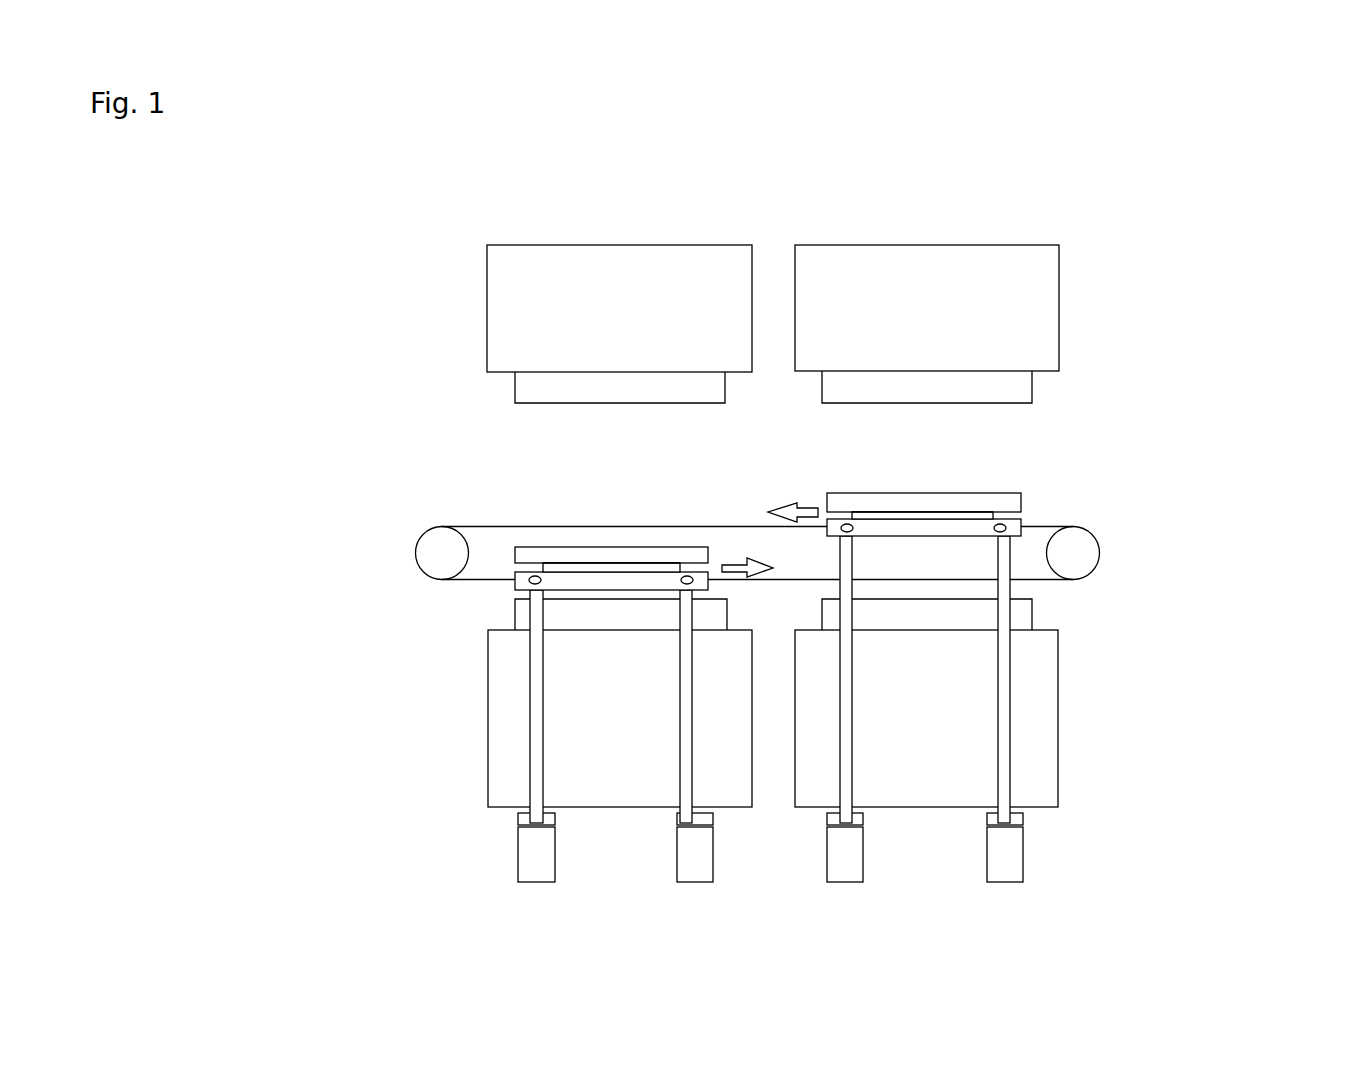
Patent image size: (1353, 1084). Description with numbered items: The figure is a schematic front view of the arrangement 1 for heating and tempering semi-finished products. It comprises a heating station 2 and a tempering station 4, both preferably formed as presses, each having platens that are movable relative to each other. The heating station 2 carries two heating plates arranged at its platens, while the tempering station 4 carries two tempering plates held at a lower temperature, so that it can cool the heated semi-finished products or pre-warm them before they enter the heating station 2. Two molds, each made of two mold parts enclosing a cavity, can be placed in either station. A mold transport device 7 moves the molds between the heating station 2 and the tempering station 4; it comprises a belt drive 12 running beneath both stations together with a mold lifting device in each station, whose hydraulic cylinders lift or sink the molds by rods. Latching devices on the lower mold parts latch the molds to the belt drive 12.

The apparatus 1 is at (222, 217).
The heating station 2 is at (549, 263).
The tempering station 4 is at (1000, 264).
The mold transport device 7 is at (653, 473).
The belt drive 12 is at (483, 525).